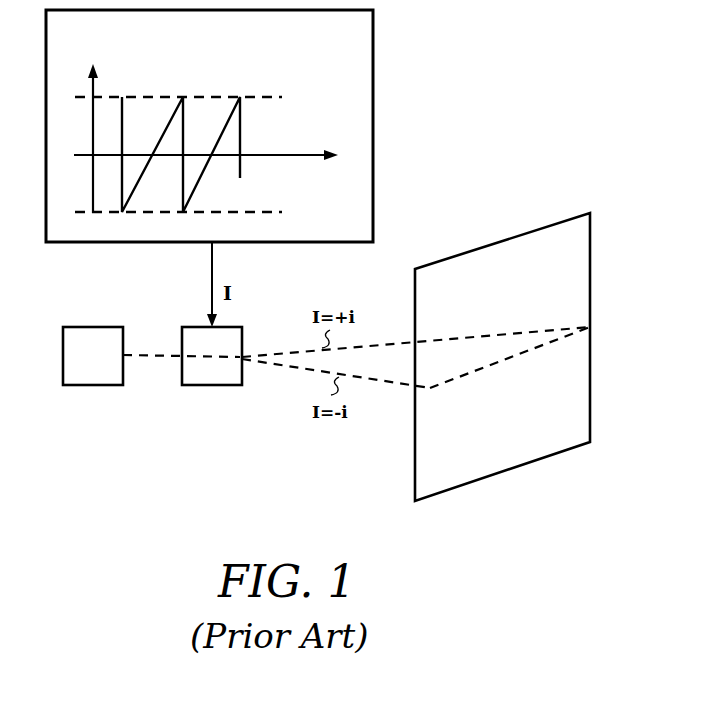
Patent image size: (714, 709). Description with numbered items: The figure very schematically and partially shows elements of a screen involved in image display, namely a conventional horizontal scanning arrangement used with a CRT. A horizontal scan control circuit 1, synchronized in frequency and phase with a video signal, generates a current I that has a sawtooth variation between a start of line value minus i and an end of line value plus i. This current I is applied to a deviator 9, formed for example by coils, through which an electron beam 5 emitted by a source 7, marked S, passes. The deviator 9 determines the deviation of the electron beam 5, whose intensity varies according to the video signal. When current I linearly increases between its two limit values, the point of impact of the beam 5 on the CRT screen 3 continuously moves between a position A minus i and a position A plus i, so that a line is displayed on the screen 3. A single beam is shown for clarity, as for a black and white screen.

The horizontal scan control circuit 1 is at (57, 143).
The CRT screen 3 is at (545, 232).
The electron beam 5 is at (152, 358).
The source 7 is at (92, 385).
The deviator 9 is at (209, 385).